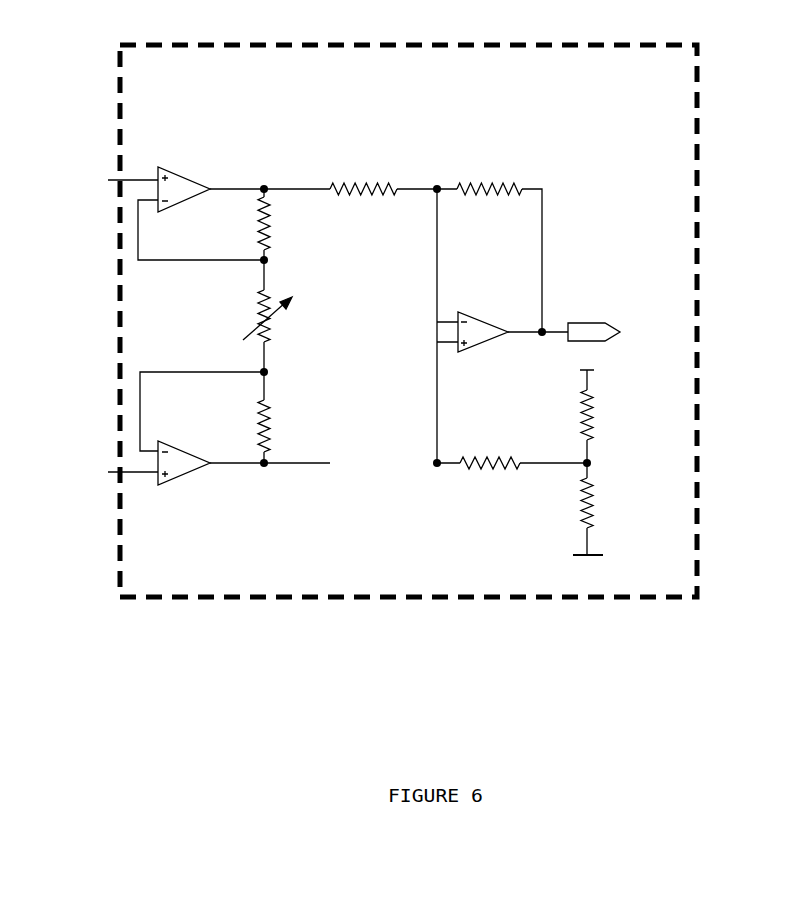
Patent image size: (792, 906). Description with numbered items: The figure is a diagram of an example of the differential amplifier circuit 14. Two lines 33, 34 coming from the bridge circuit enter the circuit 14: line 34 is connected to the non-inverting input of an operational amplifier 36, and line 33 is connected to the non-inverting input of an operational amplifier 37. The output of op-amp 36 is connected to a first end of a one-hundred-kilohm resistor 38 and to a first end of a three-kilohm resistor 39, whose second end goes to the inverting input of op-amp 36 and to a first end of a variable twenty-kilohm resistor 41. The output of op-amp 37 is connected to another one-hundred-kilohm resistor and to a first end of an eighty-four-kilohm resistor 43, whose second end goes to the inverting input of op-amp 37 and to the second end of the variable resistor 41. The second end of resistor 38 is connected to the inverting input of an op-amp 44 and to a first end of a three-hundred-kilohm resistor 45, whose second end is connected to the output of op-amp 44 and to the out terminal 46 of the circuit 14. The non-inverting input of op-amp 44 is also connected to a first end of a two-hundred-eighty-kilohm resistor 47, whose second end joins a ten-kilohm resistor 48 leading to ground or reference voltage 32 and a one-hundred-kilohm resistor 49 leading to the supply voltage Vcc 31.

The differential amplifier circuit 14 is at (700, 138).
The voltage (Vcc) 31 is at (593, 372).
The ground or reference voltage 32 is at (583, 562).
The line 33 is at (108, 472).
The line 34 is at (108, 180).
The operational amplifier 36 is at (185, 180).
The operational amplifier 37 is at (172, 445).
The 100K ohm resistor 38 is at (387, 196).
The 3K ohm resistor 39 is at (273, 207).
The variable 20K ohm resistor 41 is at (273, 293).
The 84K ohm resistor 43 is at (273, 405).
The operational amplifier 44 is at (471, 320).
The 300K ohm resistor 45 is at (523, 192).
The out terminal 46 is at (593, 322).
The 280K ohm resistor 47 is at (490, 466).
The 10K ohm resistor 48 is at (578, 499).
The 100K ohm resistor 49 is at (593, 422).